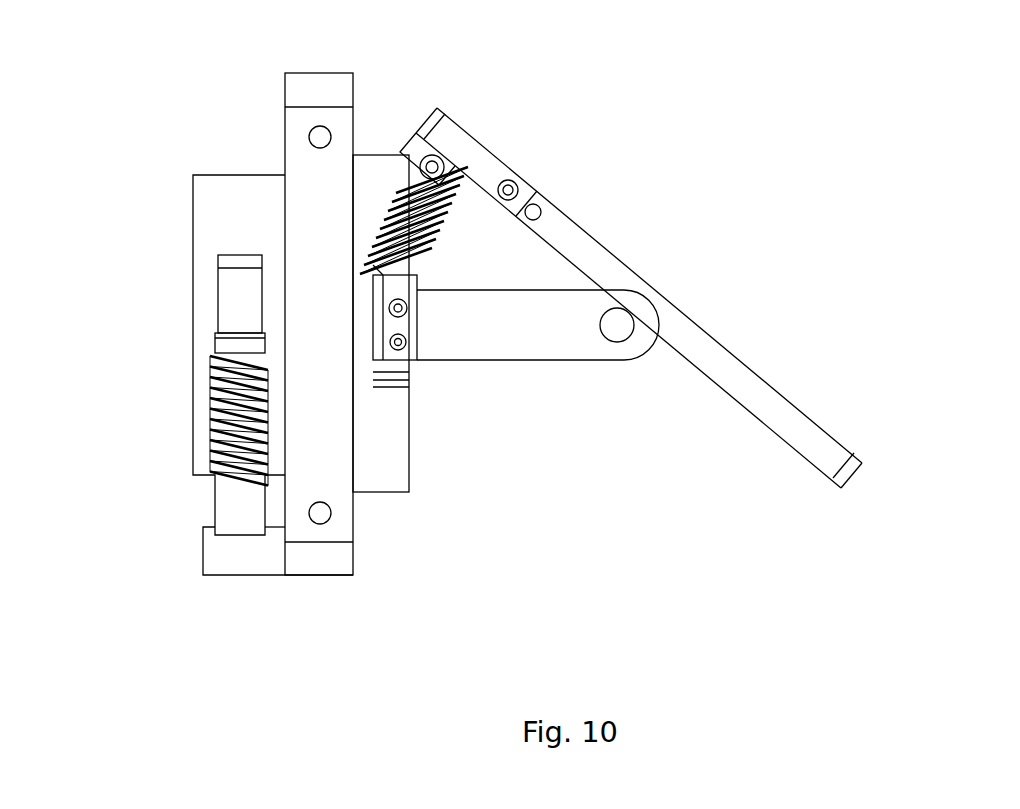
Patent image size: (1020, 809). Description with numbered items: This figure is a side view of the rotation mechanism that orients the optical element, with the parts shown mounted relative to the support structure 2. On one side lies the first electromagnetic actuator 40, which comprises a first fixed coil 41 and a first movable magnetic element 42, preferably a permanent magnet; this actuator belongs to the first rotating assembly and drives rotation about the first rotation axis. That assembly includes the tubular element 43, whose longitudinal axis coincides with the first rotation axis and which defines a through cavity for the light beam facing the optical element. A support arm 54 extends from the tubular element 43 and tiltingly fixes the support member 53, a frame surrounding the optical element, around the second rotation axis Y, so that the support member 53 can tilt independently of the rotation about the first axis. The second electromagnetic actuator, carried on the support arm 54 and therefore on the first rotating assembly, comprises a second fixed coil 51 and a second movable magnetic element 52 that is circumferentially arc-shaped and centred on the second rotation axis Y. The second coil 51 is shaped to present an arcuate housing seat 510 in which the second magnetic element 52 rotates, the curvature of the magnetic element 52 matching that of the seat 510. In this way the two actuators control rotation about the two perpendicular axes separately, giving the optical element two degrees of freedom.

The support structure 2 is at (285, 80).
The first electromagnetic actuator 40 is at (168, 363).
The first fixed coil 41 is at (210, 410).
The first movable magnetic element 42 is at (230, 307).
The tubular element 43 is at (215, 175).
The second fixed coil 51 is at (388, 212).
The second movable magnetic element 52 is at (443, 178).
The support member 53 is at (856, 462).
The support arm 54 is at (523, 340).
The arcuate housing seat 510 is at (397, 258).
The second rotation axis Y is at (617, 325).